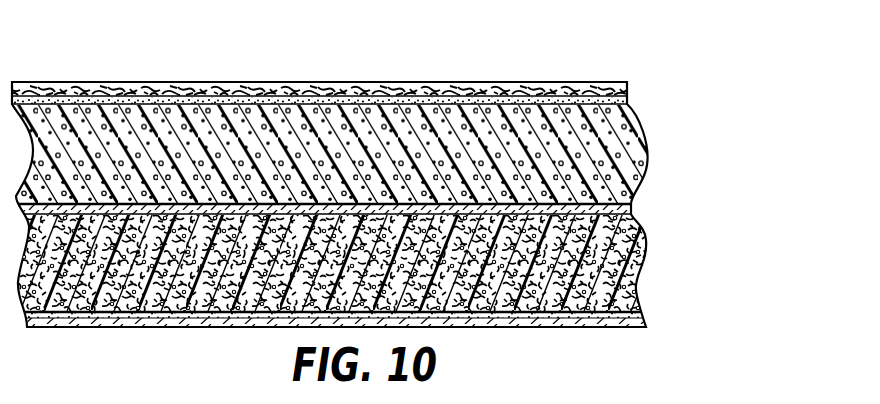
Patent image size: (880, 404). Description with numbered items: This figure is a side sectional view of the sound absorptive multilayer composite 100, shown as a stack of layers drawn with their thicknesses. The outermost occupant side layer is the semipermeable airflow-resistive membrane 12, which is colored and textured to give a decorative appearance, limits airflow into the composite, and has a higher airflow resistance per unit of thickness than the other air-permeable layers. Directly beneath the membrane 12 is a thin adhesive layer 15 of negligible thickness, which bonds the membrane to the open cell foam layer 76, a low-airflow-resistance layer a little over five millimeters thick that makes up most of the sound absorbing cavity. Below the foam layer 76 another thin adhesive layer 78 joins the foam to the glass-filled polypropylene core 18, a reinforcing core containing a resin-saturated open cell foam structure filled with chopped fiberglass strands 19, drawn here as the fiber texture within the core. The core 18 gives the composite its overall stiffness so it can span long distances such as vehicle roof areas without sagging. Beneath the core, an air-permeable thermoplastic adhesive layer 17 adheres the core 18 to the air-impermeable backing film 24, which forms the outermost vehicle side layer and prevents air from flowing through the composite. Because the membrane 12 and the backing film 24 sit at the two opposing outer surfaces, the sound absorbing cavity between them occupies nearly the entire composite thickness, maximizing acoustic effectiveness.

The sound absorptive multilayer composite 100 is at (551, 66).
The semipermeable airflow-resistive membrane 12 is at (628, 89).
The adhesive layer 15 is at (628, 101).
The foam layer 76 is at (650, 160).
The adhesive layer 78 is at (631, 212).
The chopped fiberglass strands 19 is at (646, 252).
The glass-filled polypropylene core 18 is at (634, 290).
The air-permeable thermoplastic adhesive layer 17 is at (640, 320).
The air-impermeable backing film 24 is at (646, 326).